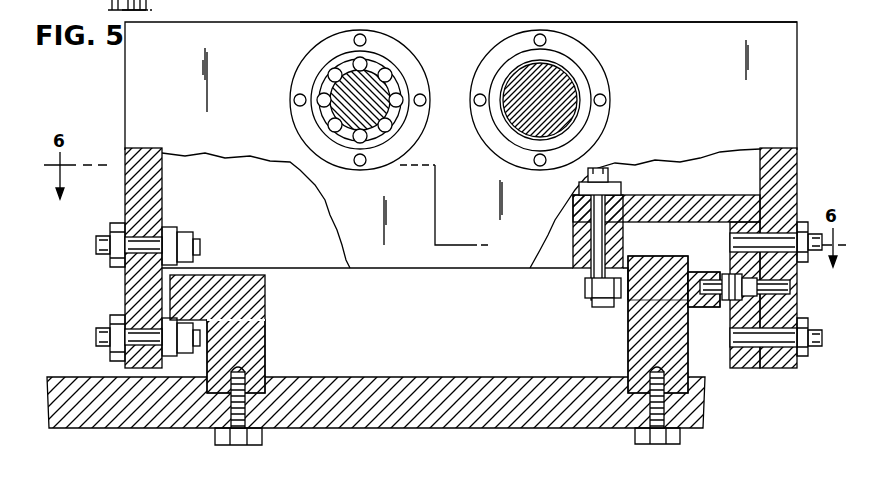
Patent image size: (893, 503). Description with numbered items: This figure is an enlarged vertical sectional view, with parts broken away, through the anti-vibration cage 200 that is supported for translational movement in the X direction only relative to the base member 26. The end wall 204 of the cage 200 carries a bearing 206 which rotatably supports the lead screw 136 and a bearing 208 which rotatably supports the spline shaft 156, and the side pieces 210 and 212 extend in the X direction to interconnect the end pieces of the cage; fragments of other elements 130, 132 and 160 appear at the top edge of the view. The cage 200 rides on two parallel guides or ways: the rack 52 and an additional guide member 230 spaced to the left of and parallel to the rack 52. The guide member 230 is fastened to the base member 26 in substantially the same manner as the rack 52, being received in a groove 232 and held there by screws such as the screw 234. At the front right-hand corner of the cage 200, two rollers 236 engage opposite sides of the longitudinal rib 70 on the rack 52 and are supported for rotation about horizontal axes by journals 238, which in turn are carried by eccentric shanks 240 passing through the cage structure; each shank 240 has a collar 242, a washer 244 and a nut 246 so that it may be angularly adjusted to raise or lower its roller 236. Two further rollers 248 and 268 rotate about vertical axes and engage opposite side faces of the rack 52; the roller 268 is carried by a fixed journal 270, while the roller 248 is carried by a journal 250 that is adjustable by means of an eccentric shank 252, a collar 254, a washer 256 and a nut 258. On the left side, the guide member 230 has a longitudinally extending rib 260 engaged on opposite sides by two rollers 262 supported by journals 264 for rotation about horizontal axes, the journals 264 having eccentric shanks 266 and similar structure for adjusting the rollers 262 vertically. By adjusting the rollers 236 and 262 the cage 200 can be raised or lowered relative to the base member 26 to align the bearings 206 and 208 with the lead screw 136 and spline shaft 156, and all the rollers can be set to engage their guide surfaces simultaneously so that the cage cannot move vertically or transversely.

The base member 26 is at (378, 377).
The rack 52 is at (628, 343).
The longitudinal rib 70 is at (640, 305).
The roller assembly 130 is at (199, 5).
The roller 132 is at (148, 8).
The lead screw 136 is at (562, 70).
The spline shaft 156 is at (380, 60).
The roller 160 is at (118, 7).
The cage 200 is at (808, 69).
The end wall 204 is at (718, 28).
The bearing 206 is at (588, 84).
The bearing 208 is at (400, 78).
The side piece 210 is at (132, 180).
The side piece 212 is at (770, 177).
The guide member 230 is at (266, 352).
The groove 232 is at (250, 395).
The screw 234 is at (237, 446).
The roller 236 is at (726, 262).
The journal 238 is at (692, 258).
The eccentric shank 240 is at (754, 235).
The collar 242 is at (724, 230).
The washer 244 is at (801, 225).
The nut 246 is at (762, 288).
The roller 248 is at (594, 304).
The journal 250 is at (612, 312).
The eccentric shank 252 is at (578, 252).
The collar 254 is at (588, 286).
The washer 256 is at (623, 196).
The nut 258 is at (610, 176).
The longitudinally extending rib 260 is at (214, 275).
The roller 262 is at (192, 250).
The journal 264 is at (170, 250).
The eccentric shank 266 is at (138, 235).
The roller 268 is at (810, 324).
The fixed journal 270 is at (758, 296).